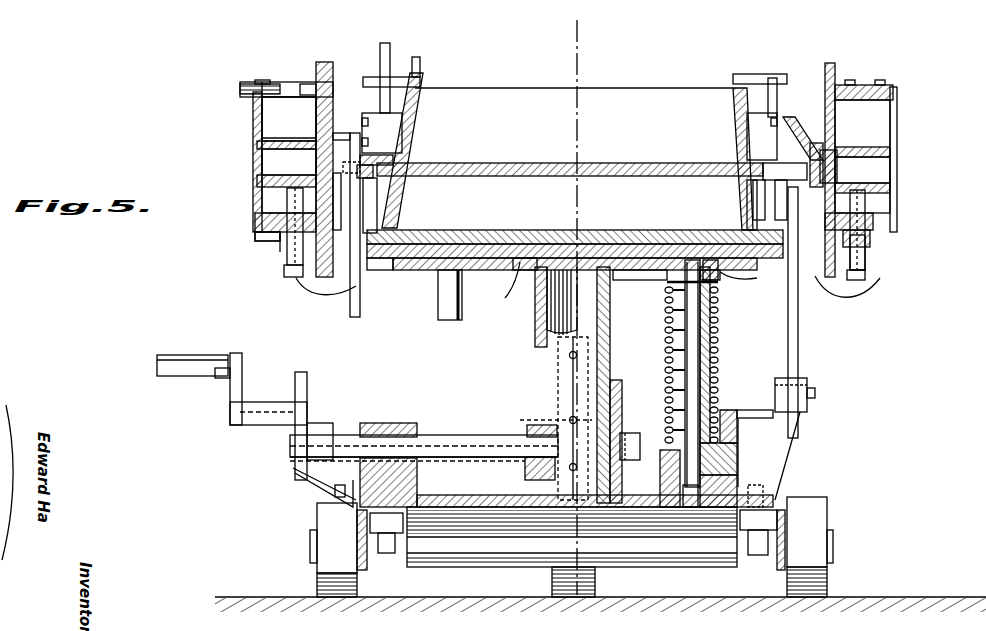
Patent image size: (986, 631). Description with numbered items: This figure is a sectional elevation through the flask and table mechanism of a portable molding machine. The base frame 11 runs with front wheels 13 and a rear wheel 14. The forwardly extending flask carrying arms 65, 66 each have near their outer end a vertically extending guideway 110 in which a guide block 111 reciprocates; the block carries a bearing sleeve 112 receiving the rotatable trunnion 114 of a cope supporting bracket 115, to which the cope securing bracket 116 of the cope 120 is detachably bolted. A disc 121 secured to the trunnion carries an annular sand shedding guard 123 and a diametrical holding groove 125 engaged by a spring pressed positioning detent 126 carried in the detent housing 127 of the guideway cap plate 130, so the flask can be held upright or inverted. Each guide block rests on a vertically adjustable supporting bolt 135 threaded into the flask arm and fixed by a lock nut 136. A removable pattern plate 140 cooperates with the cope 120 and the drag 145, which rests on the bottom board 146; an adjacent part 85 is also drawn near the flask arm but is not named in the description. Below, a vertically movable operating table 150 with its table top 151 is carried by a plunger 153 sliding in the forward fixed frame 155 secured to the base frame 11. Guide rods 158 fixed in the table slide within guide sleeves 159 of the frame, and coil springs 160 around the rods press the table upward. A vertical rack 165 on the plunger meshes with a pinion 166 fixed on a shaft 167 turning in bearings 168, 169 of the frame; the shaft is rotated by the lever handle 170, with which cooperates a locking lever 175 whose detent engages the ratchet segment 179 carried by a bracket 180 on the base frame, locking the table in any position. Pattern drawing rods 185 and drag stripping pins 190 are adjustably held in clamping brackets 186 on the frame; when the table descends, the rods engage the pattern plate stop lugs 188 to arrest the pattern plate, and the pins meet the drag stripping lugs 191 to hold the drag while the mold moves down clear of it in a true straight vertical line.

The base frame 11 is at (672, 560).
The front wheels 13 is at (316, 580).
The rear wheel 14 is at (550, 580).
The flask carrying arm 65 is at (875, 226).
The flask carrying arm 66 is at (262, 235).
The sleeve 85 is at (400, 208).
The guideway 110 is at (272, 202).
The guide block 111 is at (262, 144).
The bearing sleeve 112 is at (262, 155).
The trunnion 114 is at (285, 163).
The cope supporting bracket 115 is at (368, 128).
The cope securing bracket 116 is at (403, 133).
The cope 120 is at (652, 94).
The disc 121 is at (335, 290).
The annular sand shedding guard 123 is at (324, 62).
The holding groove 125 is at (300, 116).
The positioning detent 126 is at (303, 84).
The detent housing 127 is at (262, 83).
The guideway cap plate 130 is at (865, 85).
The supporting bolt 135 is at (285, 268).
The lock nut 136 is at (868, 250).
The pattern plate 140 is at (478, 170).
The drag 145 is at (745, 208).
The bottom board 146 is at (490, 226).
The operating table 150 is at (513, 280).
The table top 151 is at (621, 250).
The plunger 153 is at (537, 345).
The forward fixed frame 155 is at (660, 515).
The guide rods 158 is at (438, 304).
The guide sleeves 159 is at (612, 395).
The coil springs 160 is at (664, 318).
The rack 165 is at (560, 402).
The pinion 166 is at (524, 421).
The shaft 167 is at (455, 450).
The bearing 168 is at (527, 478).
The bearing 169 is at (448, 415).
The table raising and lowering lever handle 170 is at (243, 370).
The locking lever 175 is at (228, 398).
The ratchet segment 179 is at (310, 393).
The bracket 180 is at (295, 478).
The pattern drawing rods 185 is at (722, 275).
The clamping brackets 186 is at (815, 393).
The pattern plate stop lugs 188 is at (395, 160).
The drag stripping pins 190 is at (349, 310).
The drag stripping lugs 191 is at (400, 185).